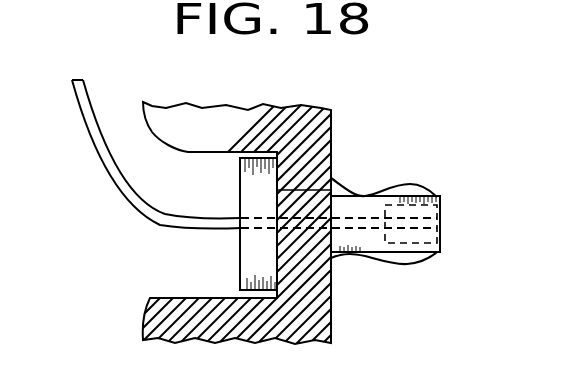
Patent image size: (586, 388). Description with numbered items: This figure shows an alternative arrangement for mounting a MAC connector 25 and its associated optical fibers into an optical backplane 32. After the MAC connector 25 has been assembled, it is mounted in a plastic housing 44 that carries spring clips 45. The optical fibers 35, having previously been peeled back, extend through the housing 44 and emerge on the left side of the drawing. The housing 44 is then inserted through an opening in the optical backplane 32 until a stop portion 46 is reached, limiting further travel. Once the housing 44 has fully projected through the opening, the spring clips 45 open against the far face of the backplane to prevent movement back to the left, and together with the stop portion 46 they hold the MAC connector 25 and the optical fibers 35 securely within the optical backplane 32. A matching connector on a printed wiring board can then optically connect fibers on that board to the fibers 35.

The MAC connector 25 is at (441, 219).
The optical backplane 32 is at (143, 338).
The optical fibers 35 is at (112, 180).
The plastic housing 44 is at (440, 198).
The spring clips 45 is at (410, 184).
The stop portion 46 is at (240, 262).